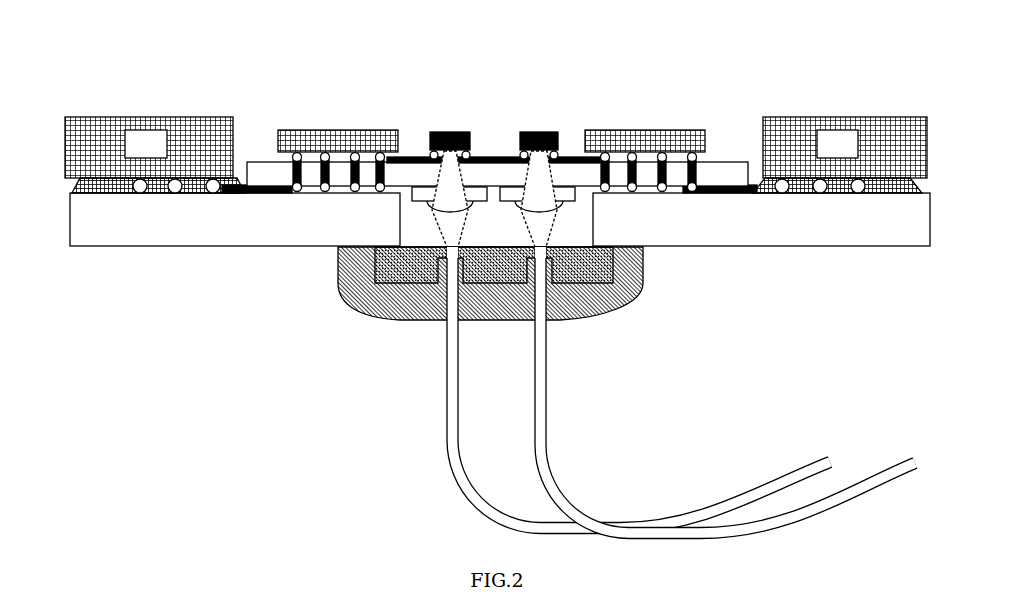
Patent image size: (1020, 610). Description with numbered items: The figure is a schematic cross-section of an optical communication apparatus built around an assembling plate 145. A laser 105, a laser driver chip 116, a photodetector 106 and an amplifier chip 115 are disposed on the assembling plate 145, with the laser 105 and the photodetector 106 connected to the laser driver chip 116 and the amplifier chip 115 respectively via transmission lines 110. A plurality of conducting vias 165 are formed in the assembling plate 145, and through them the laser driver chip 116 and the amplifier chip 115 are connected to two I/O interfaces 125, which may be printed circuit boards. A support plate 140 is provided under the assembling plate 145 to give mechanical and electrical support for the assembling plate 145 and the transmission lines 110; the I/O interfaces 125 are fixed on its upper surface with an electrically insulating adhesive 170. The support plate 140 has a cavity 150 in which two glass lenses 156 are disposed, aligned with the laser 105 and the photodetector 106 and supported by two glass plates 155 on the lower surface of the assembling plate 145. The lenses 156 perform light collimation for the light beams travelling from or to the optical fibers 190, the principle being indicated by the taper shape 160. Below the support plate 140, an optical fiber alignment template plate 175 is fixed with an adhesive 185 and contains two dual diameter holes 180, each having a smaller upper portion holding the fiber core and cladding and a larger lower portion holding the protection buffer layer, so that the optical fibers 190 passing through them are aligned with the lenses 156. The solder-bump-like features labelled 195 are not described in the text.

The laser 105 is at (450, 130).
The photodetector 106 is at (540, 130).
The transmission lines 110 is at (572, 153).
The amplifier chip 115 is at (680, 193).
The laser driver chip 116 is at (338, 153).
The I/O interfaces 125 is at (496, 147).
The support plate 140 is at (500, 219).
The assembling plate 145 is at (265, 176).
The cavity 150 is at (500, 224).
The glass plates 155 is at (425, 192).
The lenses 156 is at (452, 206).
The taper shape 160 is at (542, 192).
The conducting vias 165 is at (612, 172).
The electrically insulating adhesive 170 is at (105, 183).
The optical fiber alignment template plate 175 is at (403, 270).
The dual diameter holes 180 is at (450, 250).
The adhesive 185 is at (567, 303).
The optical fibers 190 is at (459, 414).
The solder bumps 195 is at (645, 155).